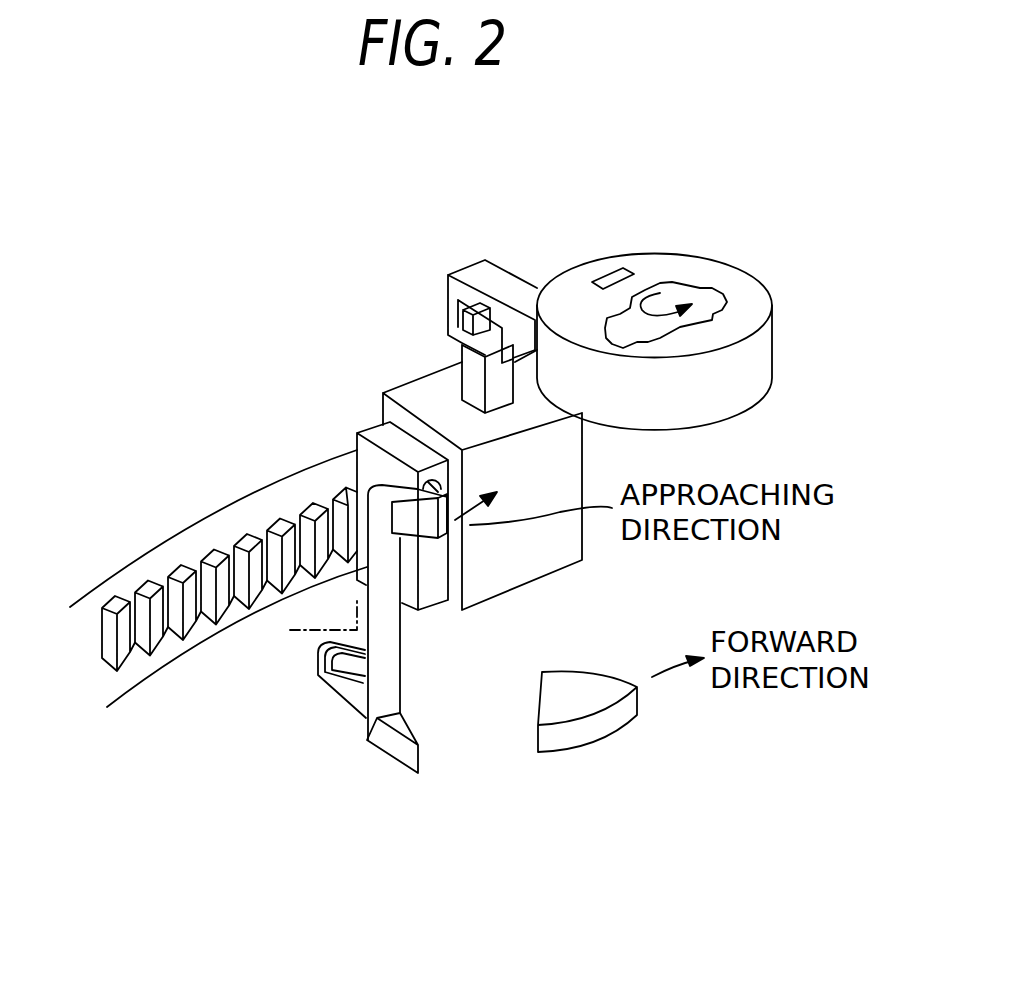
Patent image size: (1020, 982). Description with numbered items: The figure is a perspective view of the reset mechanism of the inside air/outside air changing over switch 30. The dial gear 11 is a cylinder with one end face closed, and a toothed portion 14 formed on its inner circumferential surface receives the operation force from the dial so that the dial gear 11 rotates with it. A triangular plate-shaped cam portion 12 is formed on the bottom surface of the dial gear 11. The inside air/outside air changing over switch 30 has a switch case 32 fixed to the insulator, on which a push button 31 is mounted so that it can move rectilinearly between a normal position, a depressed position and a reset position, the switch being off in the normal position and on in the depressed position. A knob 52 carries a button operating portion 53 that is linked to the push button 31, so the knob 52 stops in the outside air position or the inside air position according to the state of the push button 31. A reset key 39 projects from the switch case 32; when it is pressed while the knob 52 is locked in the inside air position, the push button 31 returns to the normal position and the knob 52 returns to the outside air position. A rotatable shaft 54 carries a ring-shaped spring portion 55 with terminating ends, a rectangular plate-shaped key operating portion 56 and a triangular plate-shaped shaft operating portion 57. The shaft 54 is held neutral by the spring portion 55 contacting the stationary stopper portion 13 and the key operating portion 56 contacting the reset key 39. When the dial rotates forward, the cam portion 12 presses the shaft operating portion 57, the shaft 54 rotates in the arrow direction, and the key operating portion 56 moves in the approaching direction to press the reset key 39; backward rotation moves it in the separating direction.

The dial gear 11 is at (202, 576).
The cam portion 12 is at (607, 717).
The stopper portion 13 is at (307, 622).
The toothed portion 14 is at (123, 640).
The inside air/outside air changing over switch 30 is at (495, 466).
The push button 31 is at (460, 349).
The switch case 32 is at (583, 560).
The reset key 39 is at (441, 485).
The knob 52 is at (662, 252).
The button operating portion 53 is at (500, 263).
The shaft 54 is at (449, 664).
The spring portion 55 is at (328, 682).
The key operating portion 56 is at (430, 537).
The shaft operating portion 57 is at (418, 763).